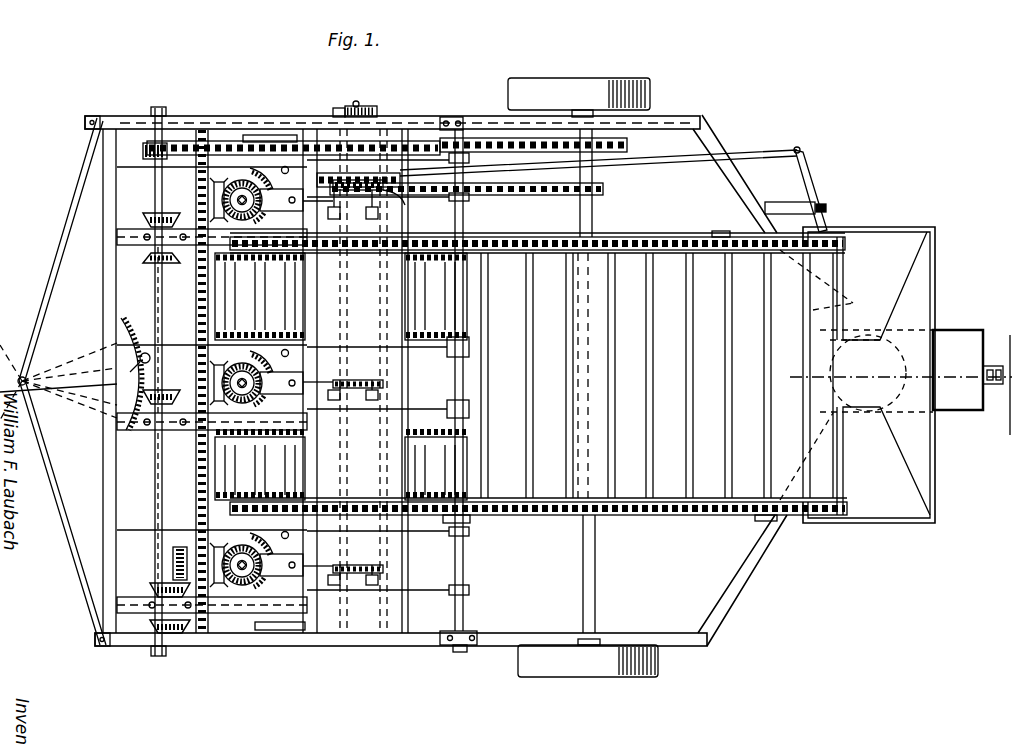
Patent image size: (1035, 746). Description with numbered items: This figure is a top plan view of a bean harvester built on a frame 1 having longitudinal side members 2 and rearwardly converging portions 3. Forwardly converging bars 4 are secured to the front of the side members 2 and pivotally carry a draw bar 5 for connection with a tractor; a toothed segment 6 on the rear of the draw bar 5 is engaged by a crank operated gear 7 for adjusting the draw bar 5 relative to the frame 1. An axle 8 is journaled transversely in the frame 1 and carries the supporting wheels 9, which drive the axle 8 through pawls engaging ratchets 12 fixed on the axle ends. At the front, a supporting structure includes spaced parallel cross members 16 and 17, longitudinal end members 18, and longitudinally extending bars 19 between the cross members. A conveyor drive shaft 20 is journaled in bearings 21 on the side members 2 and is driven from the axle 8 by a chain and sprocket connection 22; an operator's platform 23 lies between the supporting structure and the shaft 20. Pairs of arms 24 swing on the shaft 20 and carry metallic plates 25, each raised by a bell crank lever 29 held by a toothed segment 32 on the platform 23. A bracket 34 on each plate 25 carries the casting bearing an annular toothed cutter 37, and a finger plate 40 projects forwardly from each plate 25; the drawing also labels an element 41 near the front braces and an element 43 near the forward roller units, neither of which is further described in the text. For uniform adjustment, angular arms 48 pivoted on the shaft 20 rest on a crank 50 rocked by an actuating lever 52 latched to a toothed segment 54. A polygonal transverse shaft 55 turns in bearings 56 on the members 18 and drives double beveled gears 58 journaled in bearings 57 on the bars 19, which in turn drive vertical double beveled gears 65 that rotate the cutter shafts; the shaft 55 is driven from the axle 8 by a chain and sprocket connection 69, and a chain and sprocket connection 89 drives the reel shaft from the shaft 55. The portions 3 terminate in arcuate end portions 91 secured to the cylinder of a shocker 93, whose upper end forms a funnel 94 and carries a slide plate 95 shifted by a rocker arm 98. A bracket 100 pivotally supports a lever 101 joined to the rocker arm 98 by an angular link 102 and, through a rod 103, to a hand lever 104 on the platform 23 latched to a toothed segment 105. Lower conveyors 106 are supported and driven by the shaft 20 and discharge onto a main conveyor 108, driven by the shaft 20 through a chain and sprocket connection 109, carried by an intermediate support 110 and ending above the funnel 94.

The frame 1 is at (700, 95).
The longitudinal side members 2 is at (660, 116).
The rearwardly converging portions 3 is at (722, 133).
The forwardly converging bars 4 is at (52, 520).
The draw bar 5 is at (58, 378).
The toothed segment 6 is at (130, 330).
The crank operated gear 7 is at (143, 353).
The axle 8 is at (582, 600).
The supporting wheels 9 is at (545, 85).
The ratchets 12 is at (818, 377).
The cross member 16 is at (105, 492).
The cross member 17 is at (305, 128).
The longitudinal end members 18 is at (215, 116).
The longitudinally extending bars 19 is at (117, 237).
The conveyor drive shaft 20 is at (427, 480).
The bearings 21 is at (446, 118).
The chain and sprocket connection 22 is at (537, 196).
The operator's platform 23 is at (384, 128).
The arms 24 is at (458, 176).
The metallic plate 25 is at (310, 645).
The bell crank lever 29 is at (336, 380).
The toothed segment 32 is at (365, 214).
The bracket 34 is at (256, 377).
The annular toothed cutters 37 is at (261, 426).
The finger plate 40 is at (268, 646).
The upper brace 41 is at (48, 268).
The roller bar 43 is at (278, 331).
The angular arms 48 is at (275, 135).
The crank 50 is at (343, 645).
The actuating lever 52 is at (358, 104).
The toothed segment 54 is at (339, 108).
The transverse shaft 55 is at (172, 555).
The bearings 56 is at (155, 116).
The bearings 57 is at (120, 275).
The double beveled gears 58 is at (150, 215).
The double beveled gear 65 is at (266, 186).
The chain and sprocket connection 69 is at (483, 140).
The chain and sprocket connection 89 is at (158, 266).
The arcuate end portions 91 is at (858, 306).
The shocker 93 is at (917, 203).
The flared mouth or funnel 94 is at (912, 240).
The slide plate 95 is at (950, 330).
The rocker arm 98 is at (995, 366).
The bracket 100 is at (770, 203).
The lever 101 is at (812, 192).
The angular link 102 is at (192, 488).
The rod 103 is at (675, 163).
The hand lever 104 is at (390, 180).
The toothed segment 105 is at (397, 205).
The lower conveyors or elevators 106 is at (465, 300).
The main conveyor or elevator 108 is at (665, 516).
The chain and sprocket connection 109 is at (470, 518).
The intermediate support 110 is at (724, 231).